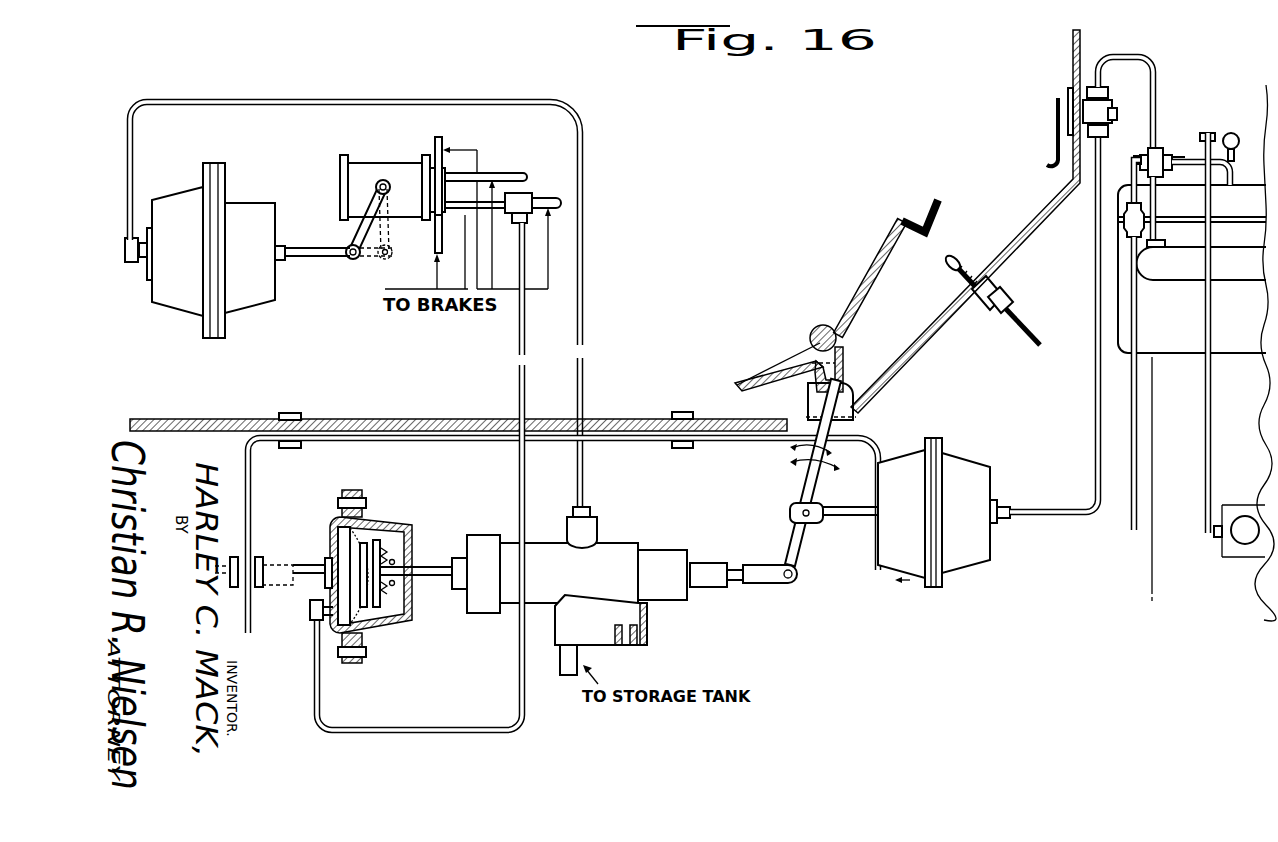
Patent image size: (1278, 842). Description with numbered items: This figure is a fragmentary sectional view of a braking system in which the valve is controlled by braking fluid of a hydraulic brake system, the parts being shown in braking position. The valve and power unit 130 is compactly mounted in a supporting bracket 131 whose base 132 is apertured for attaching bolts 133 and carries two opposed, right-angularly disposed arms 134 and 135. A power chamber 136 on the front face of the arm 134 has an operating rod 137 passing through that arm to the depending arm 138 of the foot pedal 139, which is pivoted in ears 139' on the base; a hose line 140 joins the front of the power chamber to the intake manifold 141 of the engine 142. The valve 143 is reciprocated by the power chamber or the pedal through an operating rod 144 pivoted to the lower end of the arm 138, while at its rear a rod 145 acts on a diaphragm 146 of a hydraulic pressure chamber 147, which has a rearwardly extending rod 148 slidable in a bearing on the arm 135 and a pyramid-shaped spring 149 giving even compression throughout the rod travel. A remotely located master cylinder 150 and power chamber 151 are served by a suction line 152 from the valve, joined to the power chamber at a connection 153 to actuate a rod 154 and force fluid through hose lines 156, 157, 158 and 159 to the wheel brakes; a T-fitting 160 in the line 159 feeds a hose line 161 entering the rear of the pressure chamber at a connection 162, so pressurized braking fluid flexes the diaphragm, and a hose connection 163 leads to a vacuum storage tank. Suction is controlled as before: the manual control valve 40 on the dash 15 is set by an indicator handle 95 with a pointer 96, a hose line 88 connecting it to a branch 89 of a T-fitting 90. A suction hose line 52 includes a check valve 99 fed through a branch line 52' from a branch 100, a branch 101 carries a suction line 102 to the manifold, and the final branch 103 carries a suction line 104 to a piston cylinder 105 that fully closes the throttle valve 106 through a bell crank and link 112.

The dash 15 is at (1072, 52).
The manual control valve 40 is at (1109, 110).
The suction hose line 52 is at (1159, 383).
The branch line 52' is at (1124, 173).
The hose line 88 is at (1156, 63).
The branch of T-fitting 89 is at (1147, 152).
The T-fitting 90 is at (1160, 150).
The indicator handle 95 is at (1056, 138).
The pointer 96 is at (1056, 99).
The check valve 99 is at (1125, 221).
The branch of T-fitting 100 is at (1156, 179).
The branch of T-fitting 101 is at (1168, 170).
The suction line 102 is at (1160, 232).
The final branch of T-fitting 103 is at (1178, 157).
The suction line 104 is at (1232, 160).
The piston cylinder 105 is at (1240, 134).
The throttle valve 106 is at (1246, 541).
The link 112 is at (1208, 134).
The valve and power unit 130 is at (717, 594).
The supporting bracket 131 is at (722, 443).
The base 132 is at (632, 424).
The attaching bolts 133 is at (686, 412).
The arm 134 is at (878, 558).
The arm 135 is at (254, 480).
The power chamber 136 is at (968, 462).
The operating rod 137 is at (851, 520).
The depending arm 138 is at (803, 486).
The foot pedal 139 is at (836, 296).
The ears 139' is at (850, 379).
The hose line 140 is at (1070, 519).
The intake manifold 141 is at (1178, 270).
The engine 142 is at (1170, 546).
The valve 143 is at (610, 553).
The operating rod 144 is at (756, 565).
The rod 145 is at (440, 580).
The diaphragm 146 is at (378, 520).
The hydraulic pressure chamber 147 is at (411, 523).
The rod 148 is at (306, 560).
The pyramid-shaped spring 149 is at (403, 551).
The master cylinder 150 is at (357, 172).
The power chamber 151 is at (240, 197).
The suction line 152 is at (584, 350).
The connection 153 is at (350, 240).
The rod 154 is at (312, 265).
The hose line 156 is at (435, 150).
The hose line 157 is at (432, 246).
The hose line 158 is at (500, 175).
The hose line 159 is at (548, 202).
The valve outlet 160 is at (532, 215).
The hose line 161 is at (516, 358).
The connection 162 is at (312, 614).
The hose connection 163 is at (572, 672).